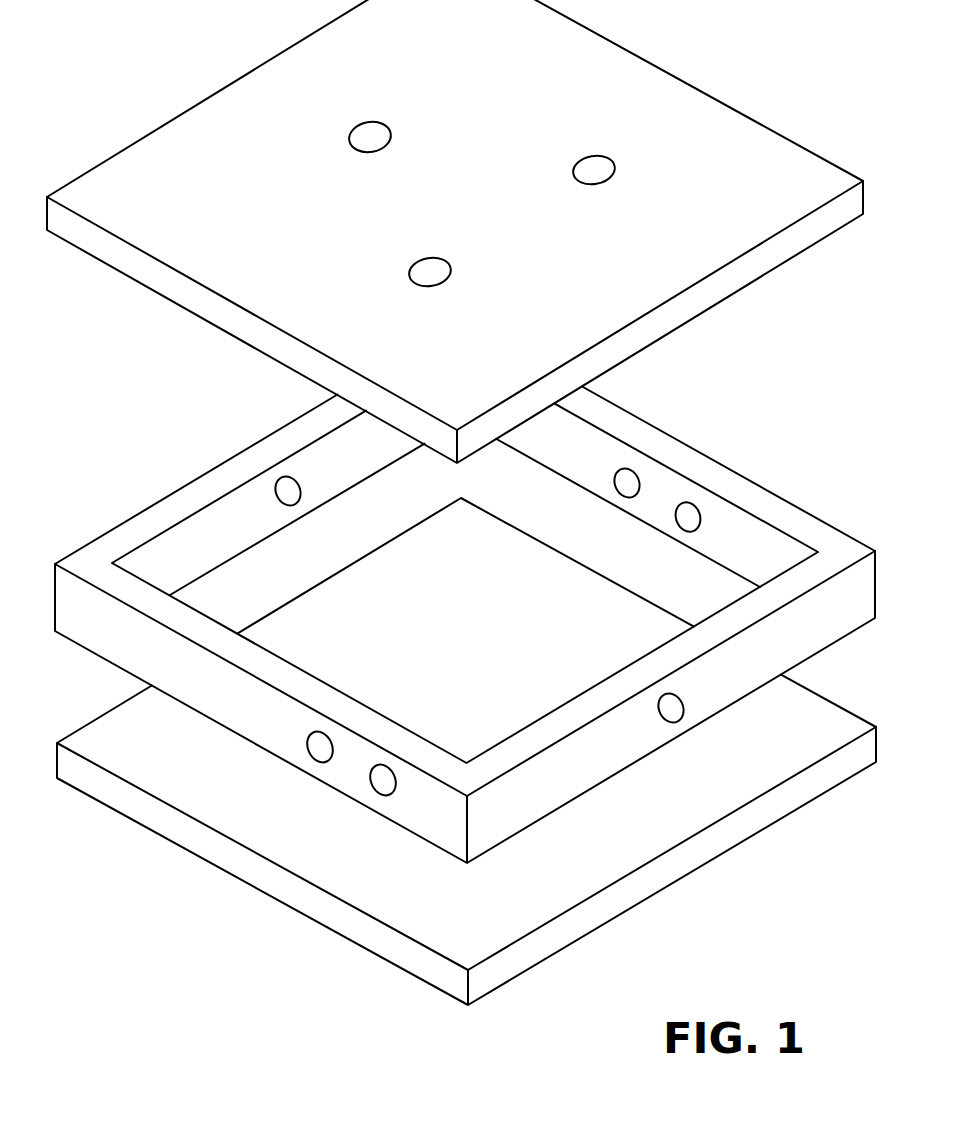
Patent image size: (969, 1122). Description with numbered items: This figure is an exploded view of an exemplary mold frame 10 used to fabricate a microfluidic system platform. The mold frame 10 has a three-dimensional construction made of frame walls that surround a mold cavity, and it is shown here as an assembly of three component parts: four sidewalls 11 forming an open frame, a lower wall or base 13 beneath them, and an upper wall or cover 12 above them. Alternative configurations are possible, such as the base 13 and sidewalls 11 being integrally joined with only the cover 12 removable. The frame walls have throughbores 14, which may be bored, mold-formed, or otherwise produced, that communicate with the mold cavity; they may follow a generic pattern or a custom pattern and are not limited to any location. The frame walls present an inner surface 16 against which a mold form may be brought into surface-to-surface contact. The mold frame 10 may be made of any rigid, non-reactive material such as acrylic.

The mold frame 10 is at (139, 446).
The sidewalls 11 is at (597, 769).
The cover 12 is at (492, 68).
The base 13 is at (474, 655).
The throughbores 14 is at (360, 148).
The inner surface 16 is at (558, 462).